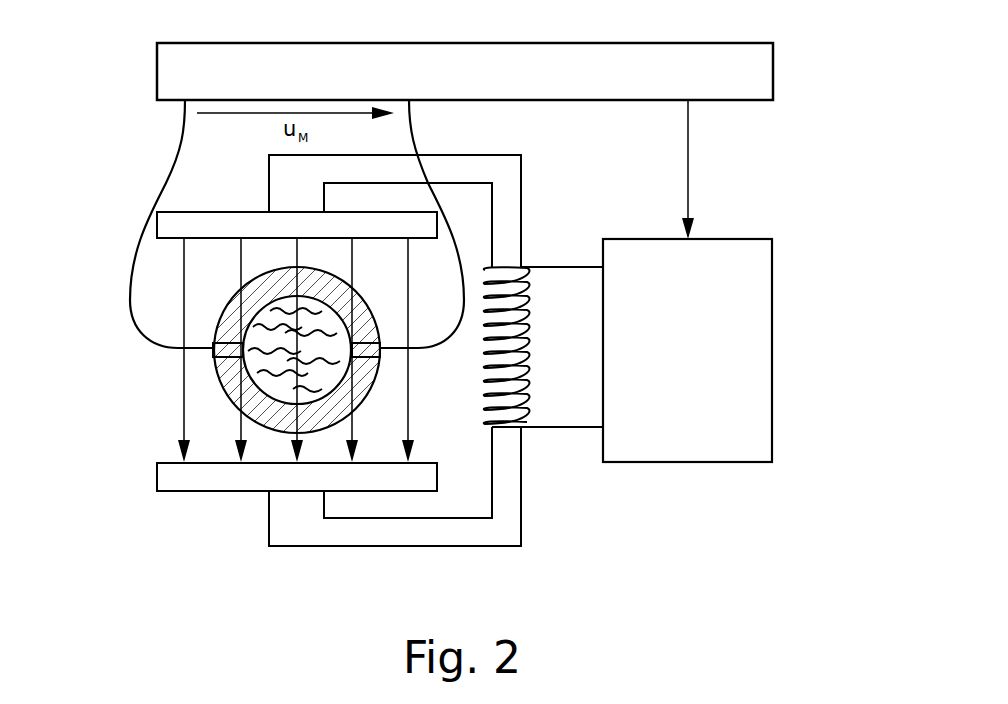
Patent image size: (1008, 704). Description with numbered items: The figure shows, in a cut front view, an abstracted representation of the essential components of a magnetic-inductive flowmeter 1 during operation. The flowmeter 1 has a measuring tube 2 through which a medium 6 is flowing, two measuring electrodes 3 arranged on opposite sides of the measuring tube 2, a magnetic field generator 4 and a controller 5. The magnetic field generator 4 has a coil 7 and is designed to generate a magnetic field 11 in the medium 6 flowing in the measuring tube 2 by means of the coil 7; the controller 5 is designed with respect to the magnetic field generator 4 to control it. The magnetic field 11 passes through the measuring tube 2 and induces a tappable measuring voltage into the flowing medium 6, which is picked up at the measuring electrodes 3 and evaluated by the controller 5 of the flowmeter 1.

The magnetic-inductive flowmeter 1 is at (98, 70).
The measuring tube 2 is at (221, 389).
The measuring electrodes 3 is at (213, 350).
The magnetic field generator 4 is at (778, 238).
The controller 5 is at (191, 85).
The medium 6 is at (287, 390).
The coil 7 is at (527, 428).
The magnetic field 11 is at (150, 280).